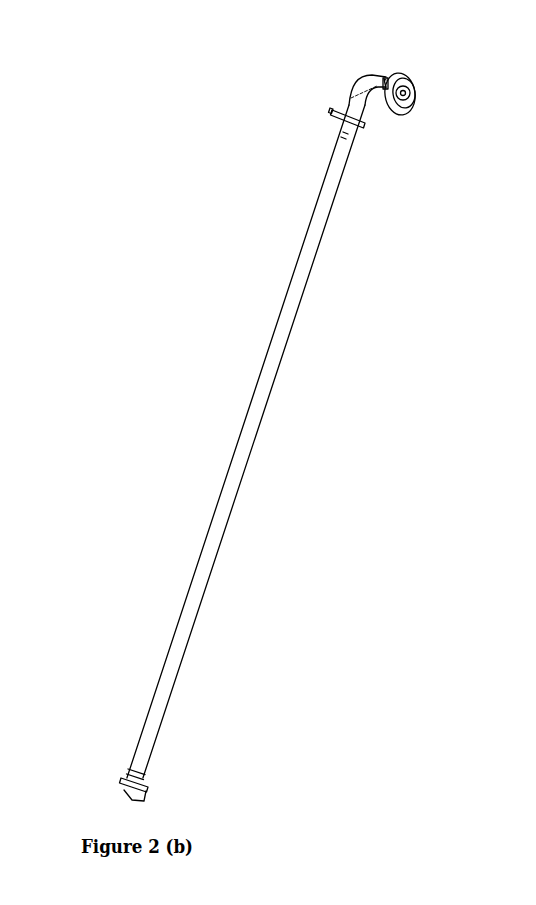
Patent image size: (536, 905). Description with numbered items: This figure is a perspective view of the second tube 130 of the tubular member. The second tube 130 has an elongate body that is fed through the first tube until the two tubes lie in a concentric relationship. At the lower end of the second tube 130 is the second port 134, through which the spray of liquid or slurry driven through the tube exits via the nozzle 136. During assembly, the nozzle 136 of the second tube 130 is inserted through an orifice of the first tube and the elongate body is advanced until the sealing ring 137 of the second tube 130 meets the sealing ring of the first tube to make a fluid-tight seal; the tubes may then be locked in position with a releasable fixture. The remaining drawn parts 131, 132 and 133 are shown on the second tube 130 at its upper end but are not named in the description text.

The second tube 130 is at (262, 427).
The elongated pole tube 131 is at (252, 426).
The head unit 132 is at (409, 97).
The head housing 133 is at (412, 76).
The second port 134 is at (130, 805).
The nozzle 136 is at (120, 792).
The sealing ring 137 is at (363, 123).